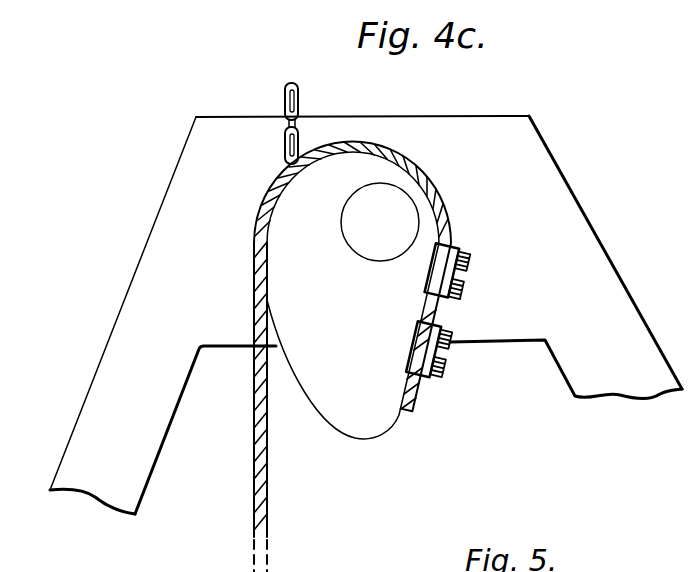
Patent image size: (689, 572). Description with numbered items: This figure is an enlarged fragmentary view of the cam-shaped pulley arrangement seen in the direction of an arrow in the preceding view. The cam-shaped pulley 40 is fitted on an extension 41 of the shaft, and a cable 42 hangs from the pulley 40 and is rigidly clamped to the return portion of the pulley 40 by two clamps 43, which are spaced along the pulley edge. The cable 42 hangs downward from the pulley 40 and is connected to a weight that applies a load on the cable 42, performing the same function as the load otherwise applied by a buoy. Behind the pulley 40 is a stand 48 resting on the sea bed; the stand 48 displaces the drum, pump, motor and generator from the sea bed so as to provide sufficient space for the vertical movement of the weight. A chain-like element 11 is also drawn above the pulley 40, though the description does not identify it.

The chain 11 is at (285, 98).
The cam-shaped pulley 40 is at (378, 421).
The extension 41 is at (390, 197).
The cable 42 is at (268, 488).
The clamps 43 is at (448, 249).
The stand 48 is at (573, 235).